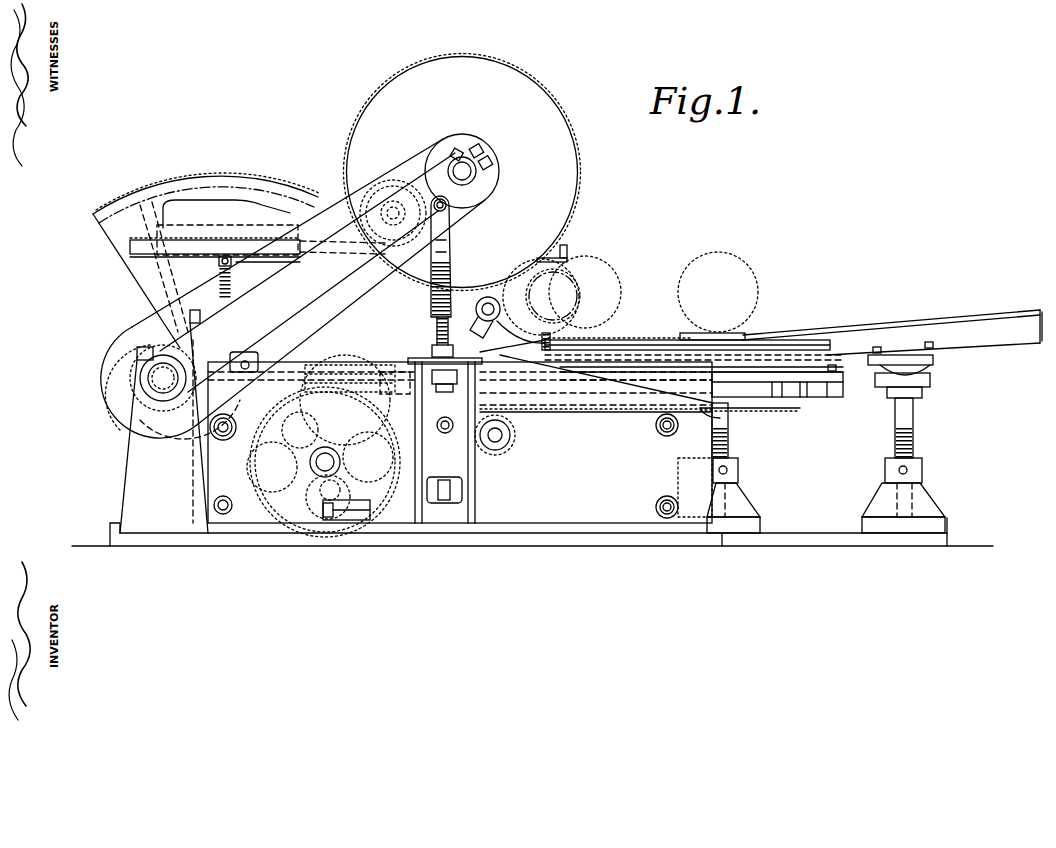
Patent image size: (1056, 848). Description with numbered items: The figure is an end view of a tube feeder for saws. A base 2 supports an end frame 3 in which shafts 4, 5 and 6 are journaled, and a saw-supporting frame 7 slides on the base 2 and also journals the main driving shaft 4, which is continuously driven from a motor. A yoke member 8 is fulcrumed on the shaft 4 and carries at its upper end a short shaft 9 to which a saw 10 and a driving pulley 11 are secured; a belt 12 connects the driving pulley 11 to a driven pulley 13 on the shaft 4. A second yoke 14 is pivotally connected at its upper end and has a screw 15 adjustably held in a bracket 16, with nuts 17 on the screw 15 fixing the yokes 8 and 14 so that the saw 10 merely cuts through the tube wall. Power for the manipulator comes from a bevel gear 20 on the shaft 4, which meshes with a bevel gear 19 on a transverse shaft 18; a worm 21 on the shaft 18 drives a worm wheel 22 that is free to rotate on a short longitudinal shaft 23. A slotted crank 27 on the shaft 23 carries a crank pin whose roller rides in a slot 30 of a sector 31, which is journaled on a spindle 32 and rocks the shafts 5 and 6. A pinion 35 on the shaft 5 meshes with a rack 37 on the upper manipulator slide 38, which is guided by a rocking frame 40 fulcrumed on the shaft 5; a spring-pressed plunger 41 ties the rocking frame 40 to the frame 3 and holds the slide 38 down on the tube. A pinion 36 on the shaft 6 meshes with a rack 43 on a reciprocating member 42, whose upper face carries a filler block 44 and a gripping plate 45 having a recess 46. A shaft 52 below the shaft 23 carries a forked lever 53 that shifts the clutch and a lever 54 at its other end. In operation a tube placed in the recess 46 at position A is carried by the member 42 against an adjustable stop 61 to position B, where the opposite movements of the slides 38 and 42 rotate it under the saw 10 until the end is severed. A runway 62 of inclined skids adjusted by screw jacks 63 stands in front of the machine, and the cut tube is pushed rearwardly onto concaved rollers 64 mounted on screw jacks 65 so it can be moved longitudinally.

The base 2 is at (530, 534).
The end frame 3 is at (313, 301).
The main driving shaft 4 is at (152, 378).
The shaft 5 is at (384, 188).
The shaft 6 is at (505, 440).
The saw-supporting frame 7 is at (164, 421).
The yoke member 8 is at (436, 338).
The short shaft 9 is at (463, 150).
The saw 10 is at (528, 78).
The driving pulley 11 is at (443, 150).
The belt 12 is at (152, 320).
The driven pulley 13 is at (112, 352).
The yoke 14 is at (449, 286).
The screw 15 is at (436, 331).
The bracket 16 is at (425, 347).
The nuts 17 is at (432, 349).
The transverse shaft 18 is at (262, 363).
The bevel gear 19 is at (178, 405).
The bevel gear 20 is at (138, 418).
The worm 21 is at (320, 372).
The worm wheel 22 is at (396, 396).
The short longitudinal shaft 23 is at (318, 470).
The slotted crank 27 is at (302, 460).
The slot 30 is at (357, 400).
The sector 31 is at (247, 183).
The spindle 32 is at (224, 438).
The pinion 35 is at (396, 197).
The pinion 36 is at (517, 432).
The rack 37 is at (192, 236).
The upper manipulator slide 38 is at (567, 248).
The rocking frame 40 is at (316, 208).
The spring-pressed plunger 41 is at (218, 264).
The reciprocating member 42 is at (815, 393).
The rack 43 is at (765, 409).
The filler block 44 is at (624, 368).
The gripping plate 45 is at (620, 345).
The recess 46 is at (560, 338).
The shaft 52 is at (350, 522).
The forked lever 53 is at (335, 498).
The lever 54 is at (464, 490).
The adjustable stop 61 is at (478, 306).
The runway 62 is at (910, 320).
The screw jacks 63 is at (914, 421).
The concaved rollers 64 is at (728, 338).
The screw jacks 65 is at (730, 441).
The tube position A is at (585, 290).
The tube position B is at (570, 275).